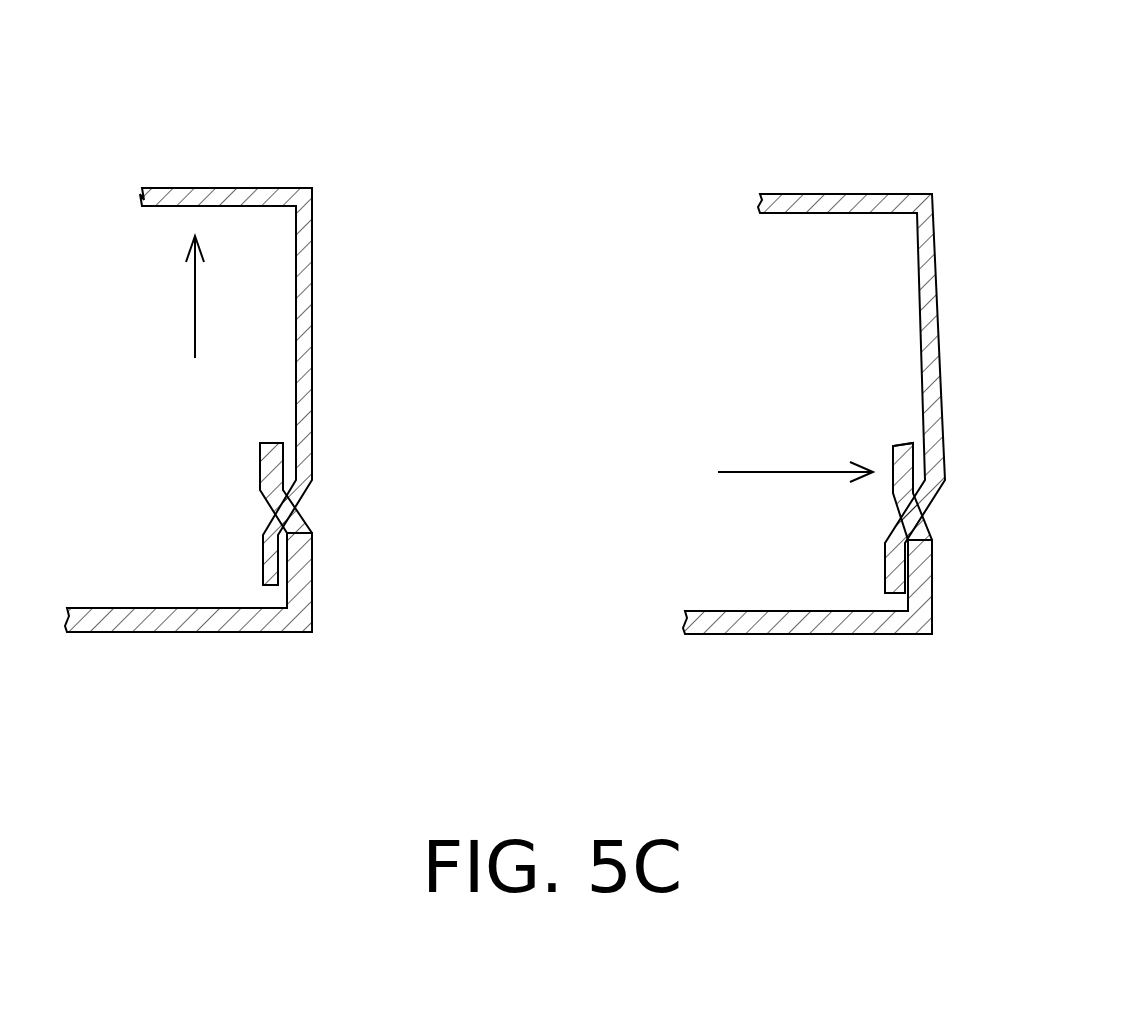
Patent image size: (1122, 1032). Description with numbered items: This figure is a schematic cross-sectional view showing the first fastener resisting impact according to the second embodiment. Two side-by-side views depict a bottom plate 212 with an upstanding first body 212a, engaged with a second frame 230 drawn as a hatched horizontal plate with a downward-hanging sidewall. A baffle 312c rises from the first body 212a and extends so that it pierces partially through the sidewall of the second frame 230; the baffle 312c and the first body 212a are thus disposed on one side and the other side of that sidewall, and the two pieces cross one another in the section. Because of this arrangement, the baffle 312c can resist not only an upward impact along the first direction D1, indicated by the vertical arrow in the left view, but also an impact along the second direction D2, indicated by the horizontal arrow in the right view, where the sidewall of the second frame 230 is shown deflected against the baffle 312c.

The second frame 230 is at (242, 200).
The base plate 212 is at (190, 633).
The first body 212a is at (302, 606).
The baffle 312c is at (279, 456).
The first direction D1 is at (192, 298).
The second direction D2 is at (763, 466).